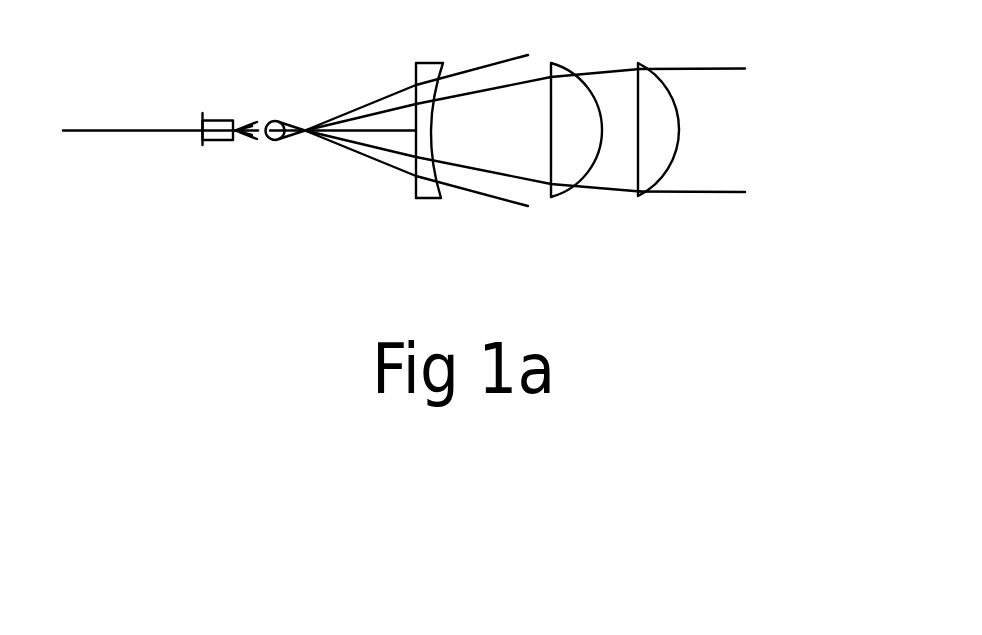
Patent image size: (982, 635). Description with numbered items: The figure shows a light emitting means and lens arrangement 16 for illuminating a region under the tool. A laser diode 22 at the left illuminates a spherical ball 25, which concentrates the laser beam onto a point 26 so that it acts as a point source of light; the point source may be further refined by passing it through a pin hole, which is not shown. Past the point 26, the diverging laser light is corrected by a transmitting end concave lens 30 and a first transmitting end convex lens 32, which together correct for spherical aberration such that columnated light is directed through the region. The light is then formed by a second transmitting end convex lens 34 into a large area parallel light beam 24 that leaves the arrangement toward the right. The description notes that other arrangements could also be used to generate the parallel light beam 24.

The illumination unit 16 is at (214, 78).
The laser diode 22 is at (222, 136).
The parallel light beam 24 is at (732, 133).
The spherical ball 25 is at (276, 134).
The point 26 is at (308, 118).
The transmitting end concave lens 30 is at (430, 195).
The first transmitting end convex lens 32 is at (572, 157).
The second transmitting end convex lens 34 is at (652, 168).